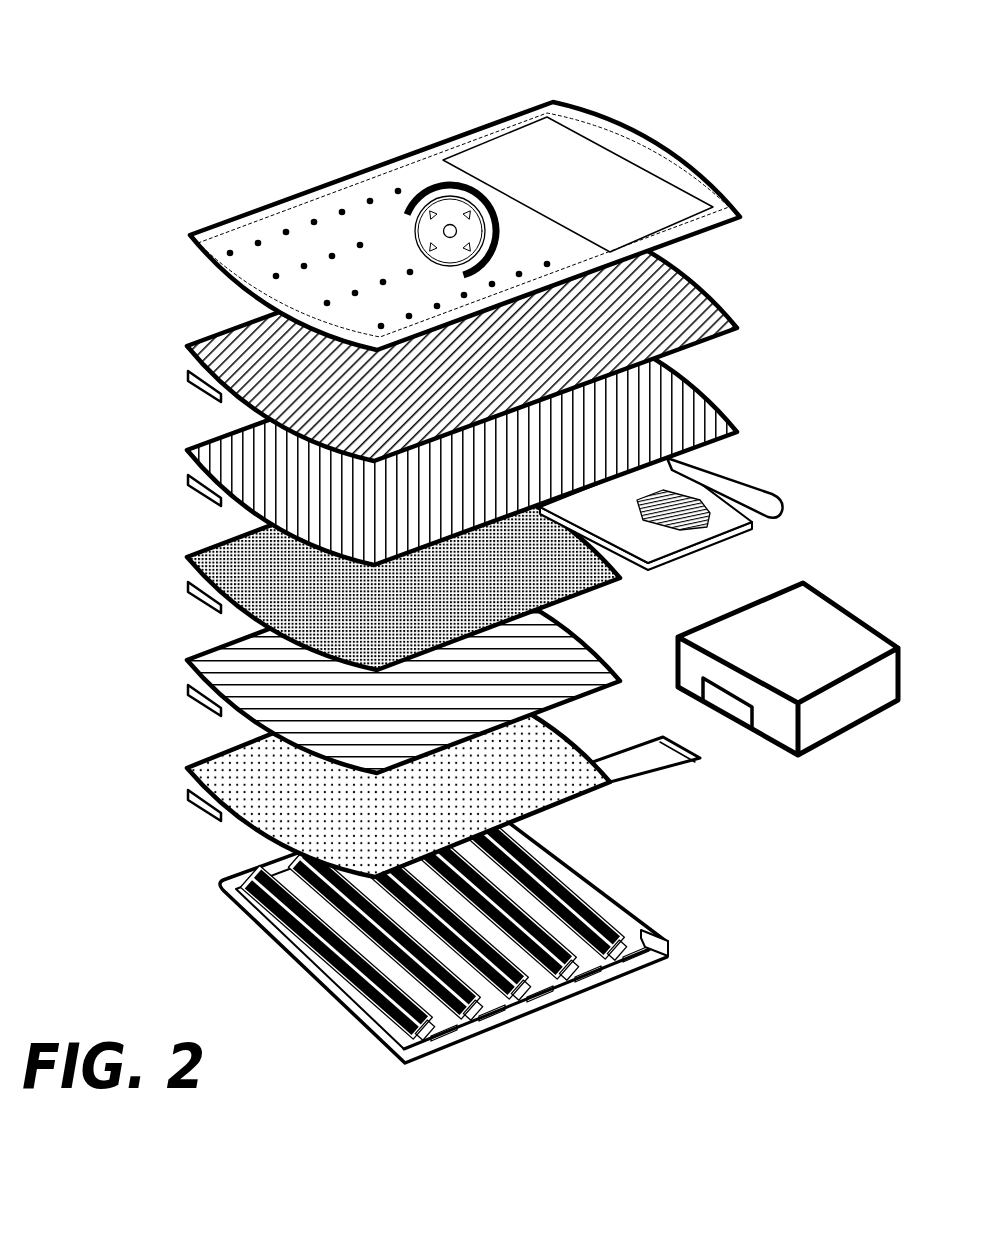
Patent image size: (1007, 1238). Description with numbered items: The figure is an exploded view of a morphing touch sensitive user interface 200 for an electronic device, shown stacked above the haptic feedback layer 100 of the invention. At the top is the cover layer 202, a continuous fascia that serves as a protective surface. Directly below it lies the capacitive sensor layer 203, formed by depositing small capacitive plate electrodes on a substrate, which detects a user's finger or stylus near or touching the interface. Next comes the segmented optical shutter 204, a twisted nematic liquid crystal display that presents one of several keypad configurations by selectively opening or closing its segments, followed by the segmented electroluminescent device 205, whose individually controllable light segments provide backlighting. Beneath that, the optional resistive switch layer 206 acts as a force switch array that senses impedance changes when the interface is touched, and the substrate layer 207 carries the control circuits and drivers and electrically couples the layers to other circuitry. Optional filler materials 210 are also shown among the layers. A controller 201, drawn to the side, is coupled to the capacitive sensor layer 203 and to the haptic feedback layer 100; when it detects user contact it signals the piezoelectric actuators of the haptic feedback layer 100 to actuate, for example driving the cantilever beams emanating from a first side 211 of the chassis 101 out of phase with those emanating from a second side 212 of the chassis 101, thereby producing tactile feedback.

The touch sensitive user interface 200 is at (113, 105).
The cover layer 202 is at (632, 150).
The capacitive sensor layer 203 is at (718, 288).
The segmented optical shutter 204 is at (186, 447).
The segmented electroluminescent device 205 is at (186, 555).
The resistive switch layer 206 is at (186, 658).
The substrate layer 207 is at (186, 766).
The filler materials 210 is at (749, 464).
The controller 201 is at (785, 627).
The haptic feedback layer 100 is at (381, 933).
The chassis 101 is at (378, 1027).
The first side 211 is at (260, 868).
The second side 212 is at (647, 947).